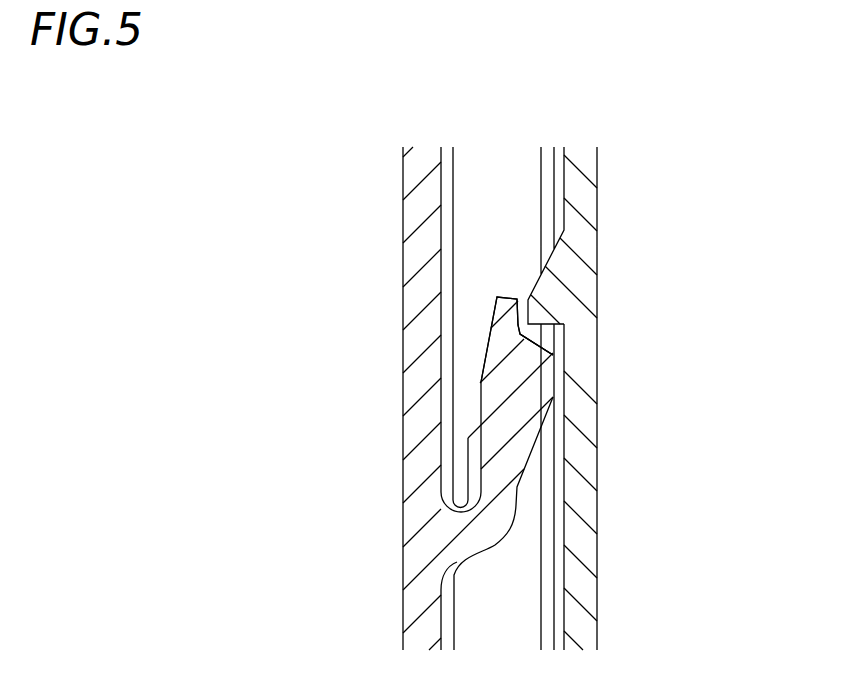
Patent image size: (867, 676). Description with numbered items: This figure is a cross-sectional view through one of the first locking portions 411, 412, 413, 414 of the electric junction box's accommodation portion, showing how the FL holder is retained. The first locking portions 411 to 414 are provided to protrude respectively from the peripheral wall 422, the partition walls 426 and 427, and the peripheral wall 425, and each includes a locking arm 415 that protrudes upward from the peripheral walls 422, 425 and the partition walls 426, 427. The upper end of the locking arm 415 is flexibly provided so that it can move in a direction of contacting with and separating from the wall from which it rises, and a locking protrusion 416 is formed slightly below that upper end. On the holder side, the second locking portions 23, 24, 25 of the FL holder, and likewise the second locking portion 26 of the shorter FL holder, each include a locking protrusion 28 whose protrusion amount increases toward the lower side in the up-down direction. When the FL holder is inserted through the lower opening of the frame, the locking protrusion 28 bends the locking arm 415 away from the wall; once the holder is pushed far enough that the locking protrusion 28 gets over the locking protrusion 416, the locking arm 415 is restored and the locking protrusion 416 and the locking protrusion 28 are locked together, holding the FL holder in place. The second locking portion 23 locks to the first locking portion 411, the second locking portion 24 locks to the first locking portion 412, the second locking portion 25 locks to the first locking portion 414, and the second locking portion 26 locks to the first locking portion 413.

The peripheral wall 422 is at (369, 398).
The peripheral wall 425 is at (369, 398).
The partition wall 426 is at (369, 398).
The partition wall 427 is at (428, 197).
The locking protrusion 28 is at (656, 398).
The second locking portion 23 is at (656, 398).
The second locking portion 24 is at (656, 398).
The second locking portion 25 is at (656, 398).
The second locking portion 26 is at (558, 208).
The first locking portion 411 is at (392, 344).
The first locking portion 412 is at (392, 344).
The first locking portion 413 is at (392, 344).
The first locking portion 414 is at (392, 344).
The locking arm 415 is at (392, 473).
The locking protrusion 416 is at (537, 360).